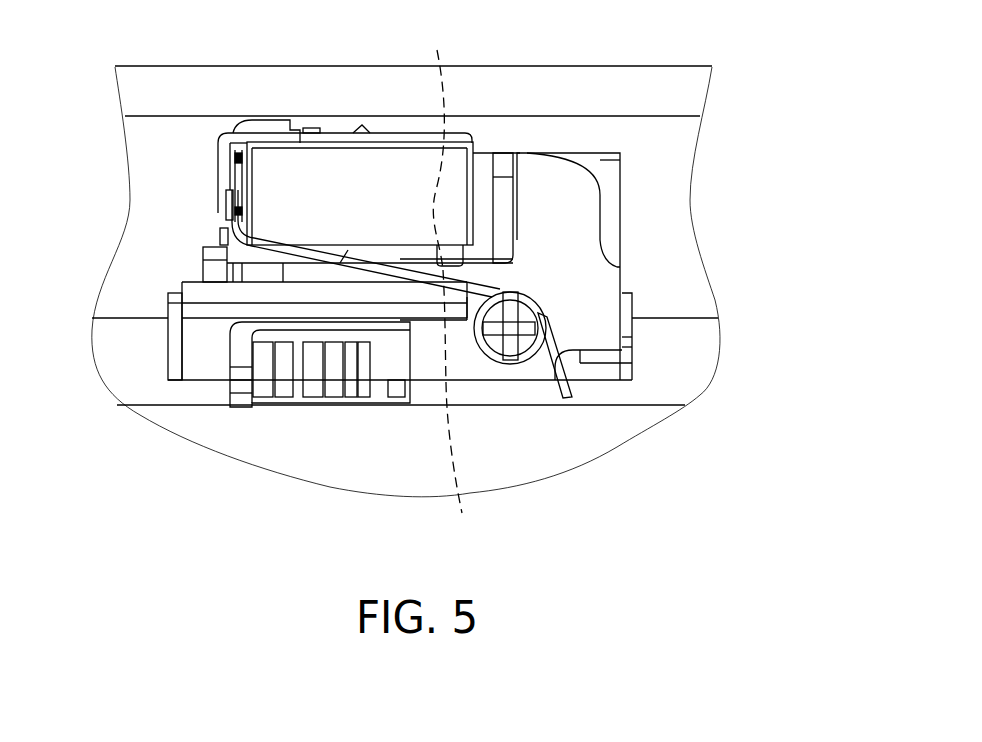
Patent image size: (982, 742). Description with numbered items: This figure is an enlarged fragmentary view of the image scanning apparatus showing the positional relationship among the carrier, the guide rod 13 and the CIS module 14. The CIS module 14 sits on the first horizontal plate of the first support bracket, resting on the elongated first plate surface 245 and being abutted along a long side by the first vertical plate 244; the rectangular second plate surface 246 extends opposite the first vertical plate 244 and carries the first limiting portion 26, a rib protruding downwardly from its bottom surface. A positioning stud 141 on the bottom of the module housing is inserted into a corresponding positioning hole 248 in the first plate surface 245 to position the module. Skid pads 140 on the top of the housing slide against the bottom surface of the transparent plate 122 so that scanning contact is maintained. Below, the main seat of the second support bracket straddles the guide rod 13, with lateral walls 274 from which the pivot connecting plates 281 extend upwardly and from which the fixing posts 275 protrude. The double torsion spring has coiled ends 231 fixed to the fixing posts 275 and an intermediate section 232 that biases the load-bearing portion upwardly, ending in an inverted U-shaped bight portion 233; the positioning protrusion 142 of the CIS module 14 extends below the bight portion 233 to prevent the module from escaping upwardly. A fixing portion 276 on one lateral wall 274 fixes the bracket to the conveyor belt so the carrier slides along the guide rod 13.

The guide rod 13 is at (687, 362).
The transparent plate 122 is at (583, 88).
The CIS module 14 is at (337, 173).
The skid pads 140 is at (270, 123).
The positioning studs 141 is at (463, 407).
The positioning protrusion 142 is at (223, 235).
The first limiting portion 26 is at (240, 269).
The coiled ends 231 is at (538, 311).
The intermediate section 232 is at (348, 250).
The bight portion 233 is at (230, 207).
The first vertical plate 244 is at (483, 200).
The first plate surface 245 is at (400, 255).
The second plate surface 246 is at (228, 254).
The positioning holes 248 is at (437, 147).
The lateral walls 274 is at (467, 365).
The fixing posts 275 is at (510, 335).
The fixing portion 276 is at (390, 407).
The pivot connecting plates 281 is at (582, 209).